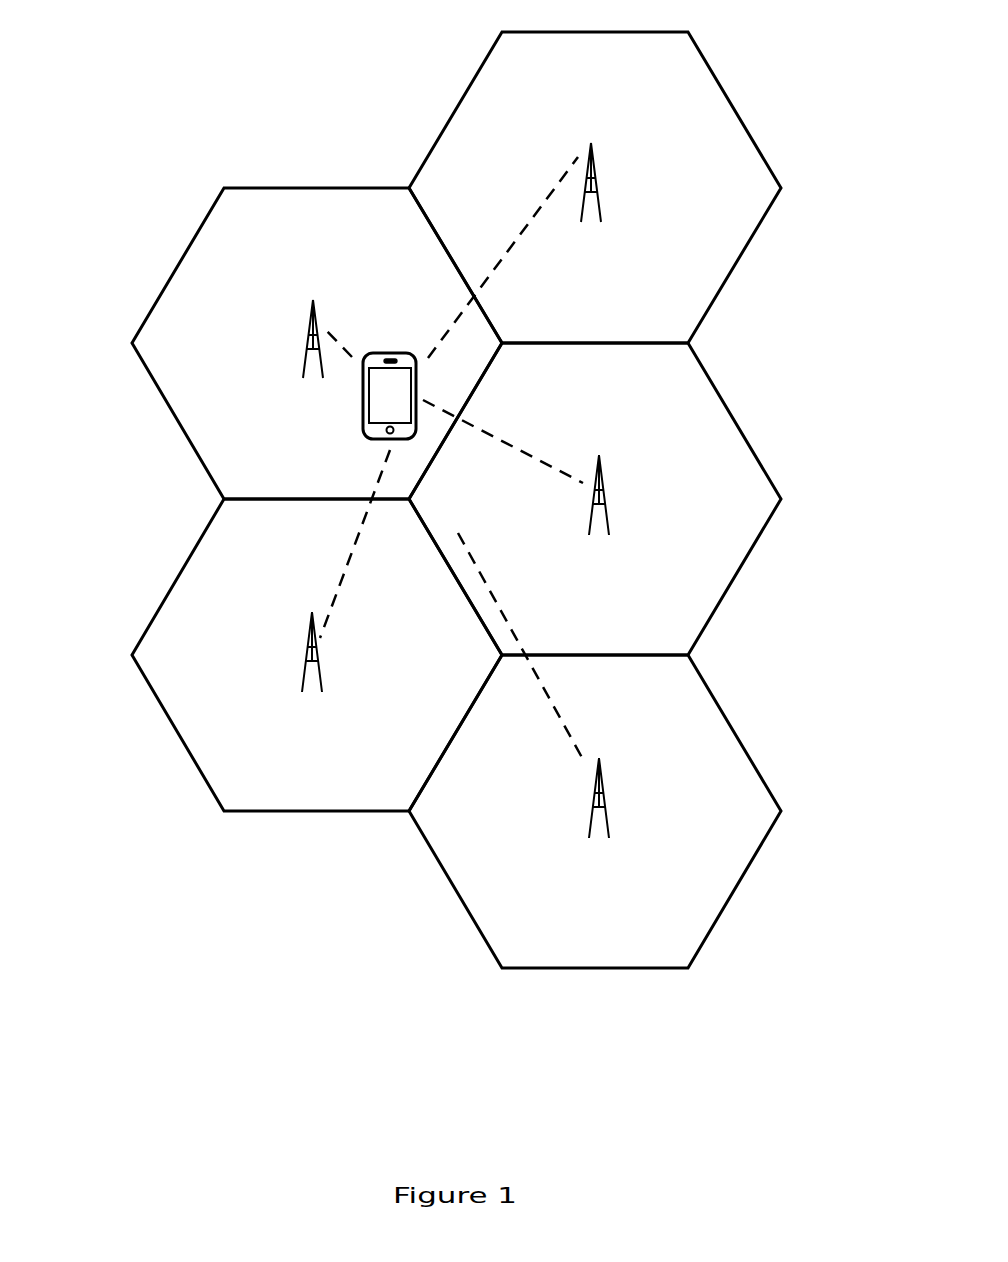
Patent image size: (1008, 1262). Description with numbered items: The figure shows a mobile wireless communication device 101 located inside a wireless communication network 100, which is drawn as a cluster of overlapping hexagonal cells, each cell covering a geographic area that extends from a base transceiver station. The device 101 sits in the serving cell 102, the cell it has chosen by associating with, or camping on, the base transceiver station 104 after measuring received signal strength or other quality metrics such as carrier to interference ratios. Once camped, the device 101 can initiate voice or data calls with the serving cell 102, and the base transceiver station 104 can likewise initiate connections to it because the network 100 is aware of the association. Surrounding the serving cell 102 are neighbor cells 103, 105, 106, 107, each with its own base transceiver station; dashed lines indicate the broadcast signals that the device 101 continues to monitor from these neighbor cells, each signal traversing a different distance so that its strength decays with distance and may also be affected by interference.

The wireless communication network 100 is at (113, 58).
The mobile wireless communication device 101 is at (351, 414).
The serving cell 102 is at (189, 210).
The neighbor cell 103 is at (444, 92).
The base transceiver station 104 is at (326, 293).
The neighbor cell 105 is at (754, 412).
The neighbor cell 106 is at (179, 538).
The neighbor cell 107 is at (751, 720).